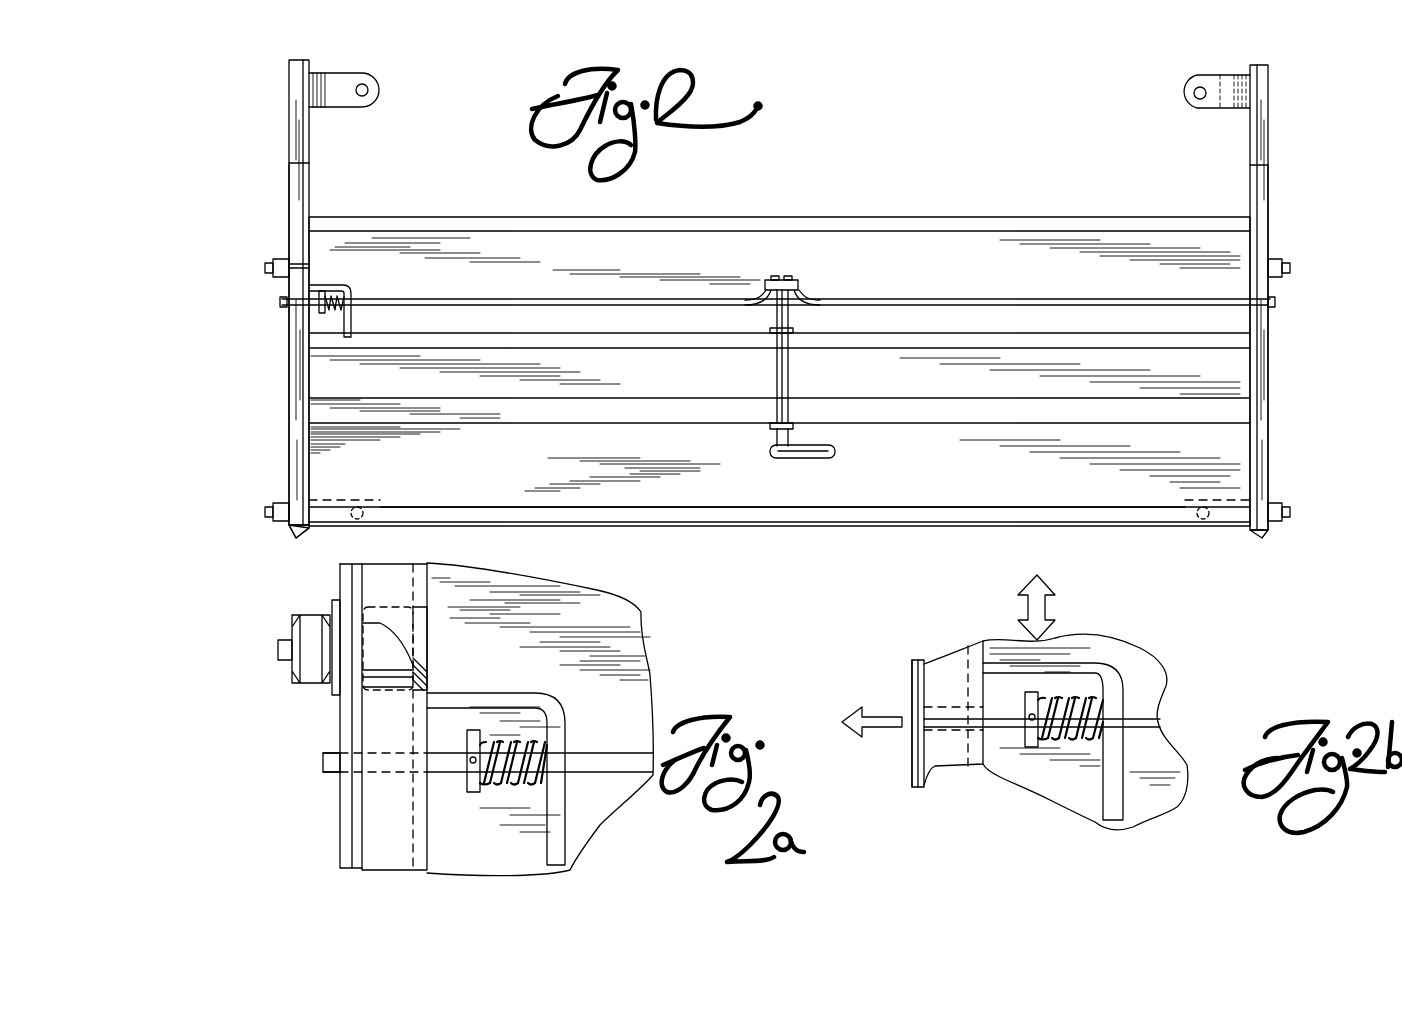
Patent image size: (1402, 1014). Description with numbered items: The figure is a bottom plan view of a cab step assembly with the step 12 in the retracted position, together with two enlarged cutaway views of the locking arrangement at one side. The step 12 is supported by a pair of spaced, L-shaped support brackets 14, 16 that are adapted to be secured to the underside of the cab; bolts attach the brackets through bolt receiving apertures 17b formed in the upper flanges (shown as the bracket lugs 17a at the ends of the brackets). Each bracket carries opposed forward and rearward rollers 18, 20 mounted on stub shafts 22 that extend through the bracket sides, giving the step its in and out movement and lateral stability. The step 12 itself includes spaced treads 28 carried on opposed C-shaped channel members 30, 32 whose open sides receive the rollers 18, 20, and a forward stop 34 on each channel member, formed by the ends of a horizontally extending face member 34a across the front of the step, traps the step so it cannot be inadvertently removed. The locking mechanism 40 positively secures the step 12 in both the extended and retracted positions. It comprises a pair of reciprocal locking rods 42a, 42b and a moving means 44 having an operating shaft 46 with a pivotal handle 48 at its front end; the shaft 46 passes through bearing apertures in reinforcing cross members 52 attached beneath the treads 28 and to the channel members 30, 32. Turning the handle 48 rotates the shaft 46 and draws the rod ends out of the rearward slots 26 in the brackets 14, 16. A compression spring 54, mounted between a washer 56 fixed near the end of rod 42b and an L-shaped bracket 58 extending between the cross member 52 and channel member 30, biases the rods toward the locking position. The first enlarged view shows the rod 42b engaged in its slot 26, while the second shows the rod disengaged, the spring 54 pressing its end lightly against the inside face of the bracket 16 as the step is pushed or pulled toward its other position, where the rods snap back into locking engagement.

In FIG. 2, the step 12 is at (884, 541).
In FIG. 2, the support bracket 14 is at (1268, 103).
In FIG. 2, the support bracket 16 is at (290, 178).
In FIG. 2A, the support bracket 16 is at (340, 830).
In FIG. 2B, the support bracket 16 is at (915, 780).
In FIG. 2, the hinge bracket 17a is at (378, 87).
In FIG. 2, the bolt receiving aperture 17b is at (367, 96).
In FIG. 2, the forward roller 18 is at (280, 535).
In FIG. 2, the rearward roller 20 is at (282, 286).
In FIG. 2A, the rearward roller 20 is at (378, 668).
In FIG. 2, the stub shaft 22 is at (252, 509).
In FIG. 2A, the stub shaft 22 is at (254, 679).
In FIG. 2B, the rearward slot 26 is at (913, 678).
In FIG. 2, the tread 28 is at (1226, 250).
In FIG. 2A, the tread 28 is at (655, 697).
In FIG. 2B, the tread 28 is at (1148, 800).
In FIG. 2, the channel member 30 is at (290, 408).
In FIG. 2A, the channel member 32 is at (400, 856).
In FIG. 2B, the channel member 32 is at (955, 760).
In FIG. 2, the forward stop 34 is at (300, 537).
In FIG. 2, the face member 34a is at (536, 520).
In FIG. 2, the locking mechanism 40 is at (786, 164).
In FIG. 2, the locking rod 42a is at (515, 300).
In FIG. 2, the locking rod 42b is at (282, 306).
In FIG. 2A, the locking rod 42b is at (328, 760).
In FIG. 2B, the locking rod 42b is at (1160, 725).
In FIG. 2, the moving means 44 is at (748, 452).
In FIG. 2, the operating shaft 46 is at (789, 384).
In FIG. 2, the handle 48 is at (796, 458).
In FIG. 2, the cross member 52 is at (798, 220).
In FIG. 2, the compression spring 54 is at (337, 314).
In FIG. 2A, the compression spring 54 is at (523, 785).
In FIG. 2B, the compression spring 54 is at (1090, 745).
In FIG. 2, the washer 56 is at (321, 290).
In FIG. 2A, the washer 56 is at (470, 787).
In FIG. 2B, the washer 56 is at (1035, 694).
In FIG. 2, the L-shaped bracket 58 is at (318, 285).
In FIG. 2A, the L-shaped bracket 58 is at (560, 857).
In FIG. 2B, the L-shaped bracket 58 is at (1118, 690).